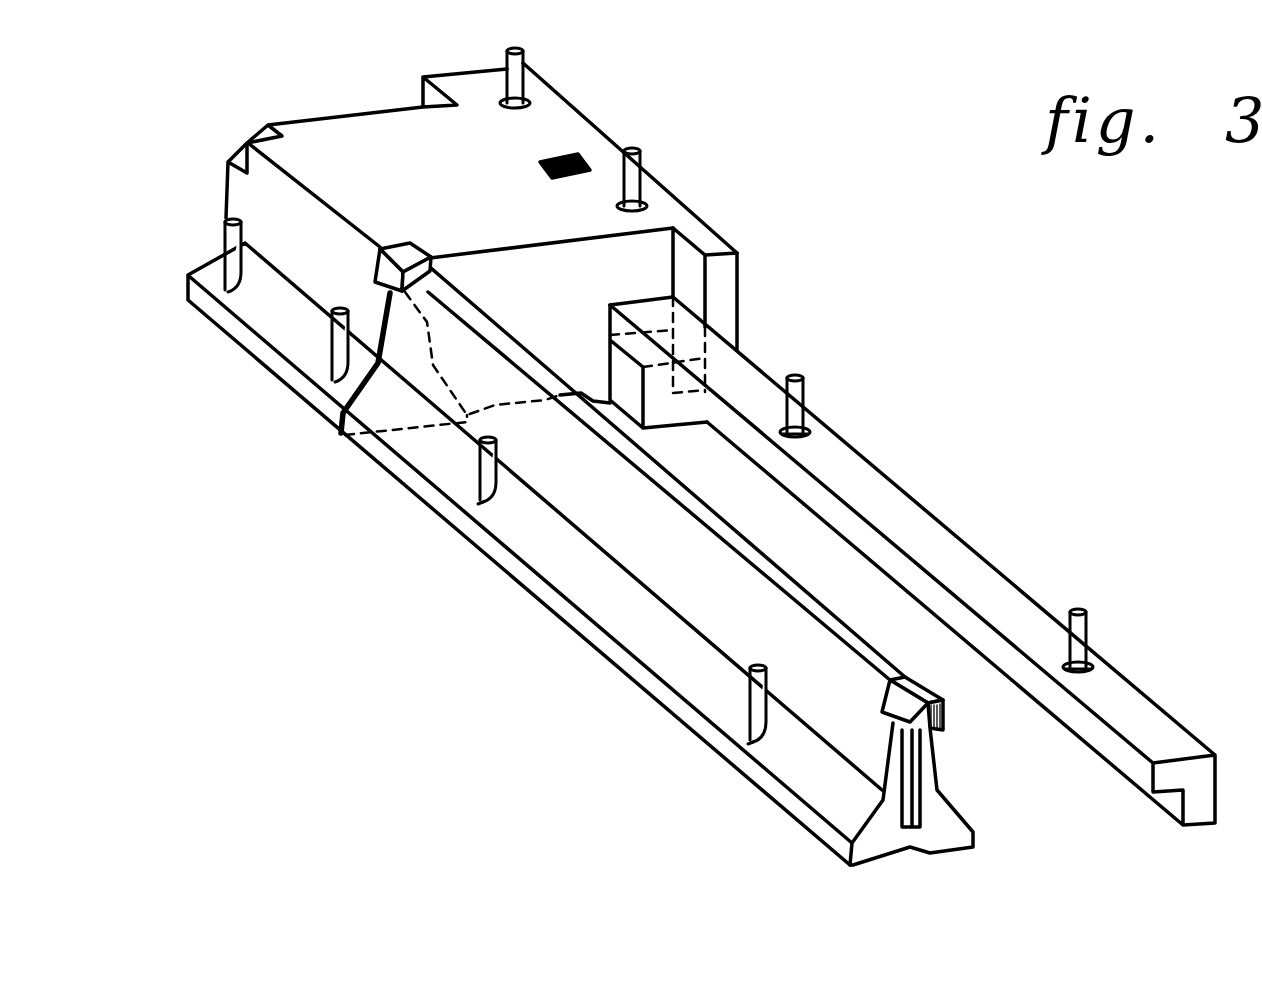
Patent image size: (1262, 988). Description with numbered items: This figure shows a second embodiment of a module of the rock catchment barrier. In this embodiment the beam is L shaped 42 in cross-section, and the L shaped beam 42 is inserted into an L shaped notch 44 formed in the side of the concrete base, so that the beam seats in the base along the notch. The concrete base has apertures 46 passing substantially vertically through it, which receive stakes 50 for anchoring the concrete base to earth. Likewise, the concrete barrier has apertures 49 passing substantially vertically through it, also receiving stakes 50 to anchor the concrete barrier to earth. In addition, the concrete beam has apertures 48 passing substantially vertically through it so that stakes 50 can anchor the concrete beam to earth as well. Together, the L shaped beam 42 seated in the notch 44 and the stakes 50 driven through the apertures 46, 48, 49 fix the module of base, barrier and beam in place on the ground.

The L shaped beam 42 is at (905, 505).
The L shaped notch 44 is at (737, 350).
The apertures 46 is at (342, 432).
The apertures 48 is at (812, 428).
The apertures 49 is at (487, 500).
The stakes 50 is at (525, 55).